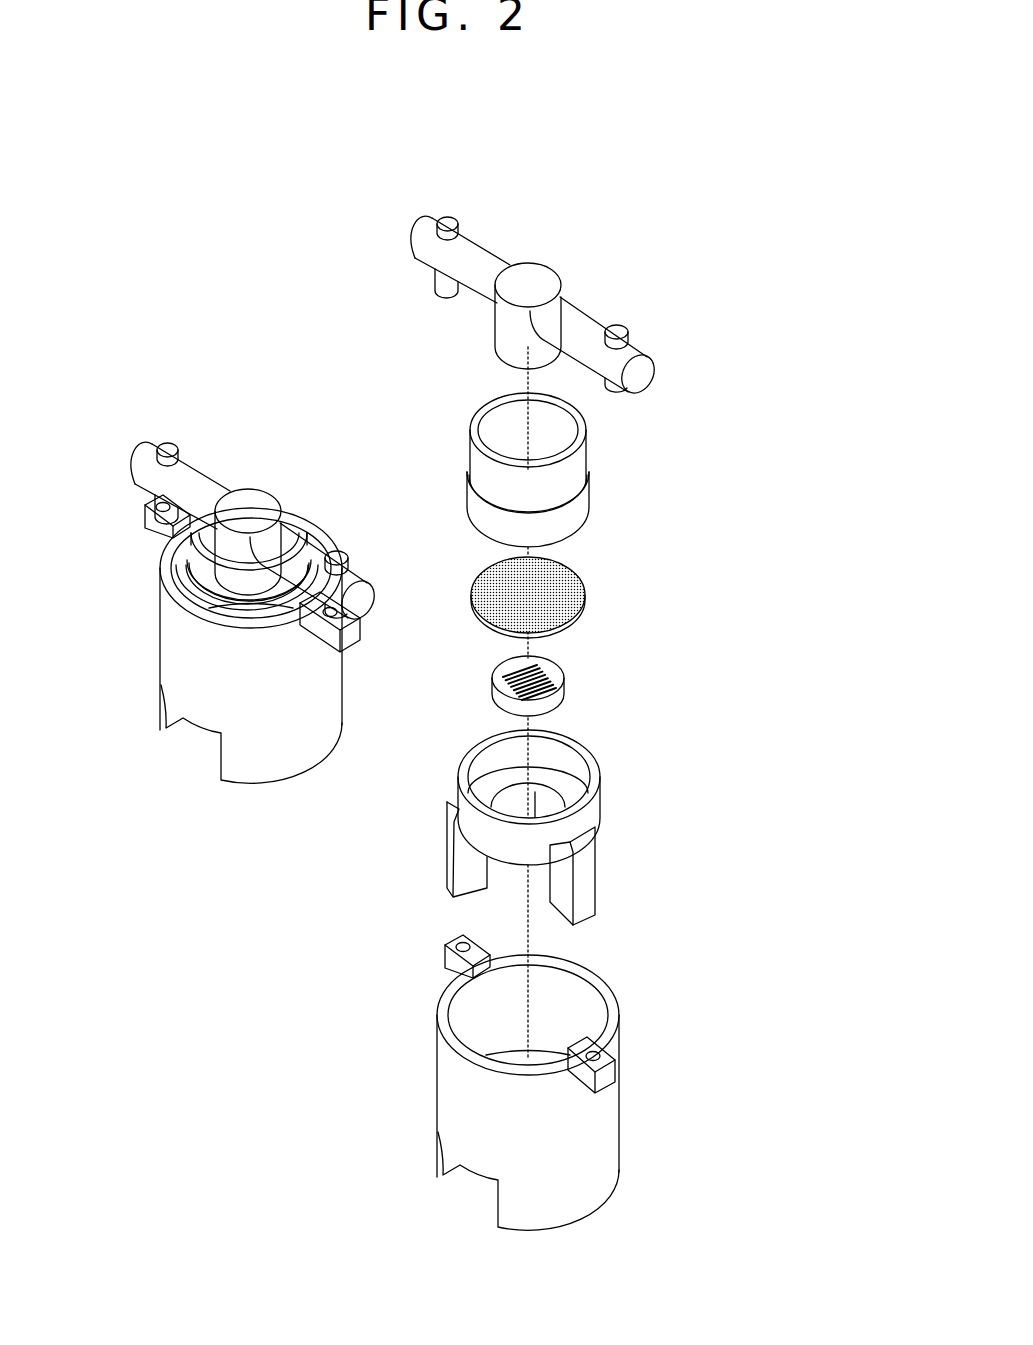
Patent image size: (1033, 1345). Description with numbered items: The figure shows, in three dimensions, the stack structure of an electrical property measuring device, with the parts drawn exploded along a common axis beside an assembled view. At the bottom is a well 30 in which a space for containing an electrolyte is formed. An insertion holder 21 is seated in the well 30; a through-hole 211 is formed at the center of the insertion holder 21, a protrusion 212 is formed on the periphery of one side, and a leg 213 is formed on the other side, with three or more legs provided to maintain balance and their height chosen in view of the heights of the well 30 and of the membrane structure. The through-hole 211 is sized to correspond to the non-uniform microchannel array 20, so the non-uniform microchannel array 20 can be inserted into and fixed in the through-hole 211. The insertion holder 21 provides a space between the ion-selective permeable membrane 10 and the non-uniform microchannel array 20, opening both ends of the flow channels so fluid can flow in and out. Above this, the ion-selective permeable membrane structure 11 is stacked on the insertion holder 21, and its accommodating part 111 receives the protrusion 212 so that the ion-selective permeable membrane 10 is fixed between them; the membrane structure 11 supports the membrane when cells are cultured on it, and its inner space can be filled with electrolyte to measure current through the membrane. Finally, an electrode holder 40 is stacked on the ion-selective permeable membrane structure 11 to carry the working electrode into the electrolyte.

The electrode holder 40 is at (582, 320).
The ion-selective permeable membrane structure 11 is at (617, 470).
The accommodating part 111 is at (582, 512).
The ion-selective permeable membrane 10 is at (575, 593).
The non-uniform microchannel array 20 is at (570, 690).
The insertion holder 21 is at (592, 827).
The protrusion 212 is at (570, 762).
The through-hole 211 is at (545, 803).
The leg 213 is at (588, 857).
The well 30 is at (600, 1118).